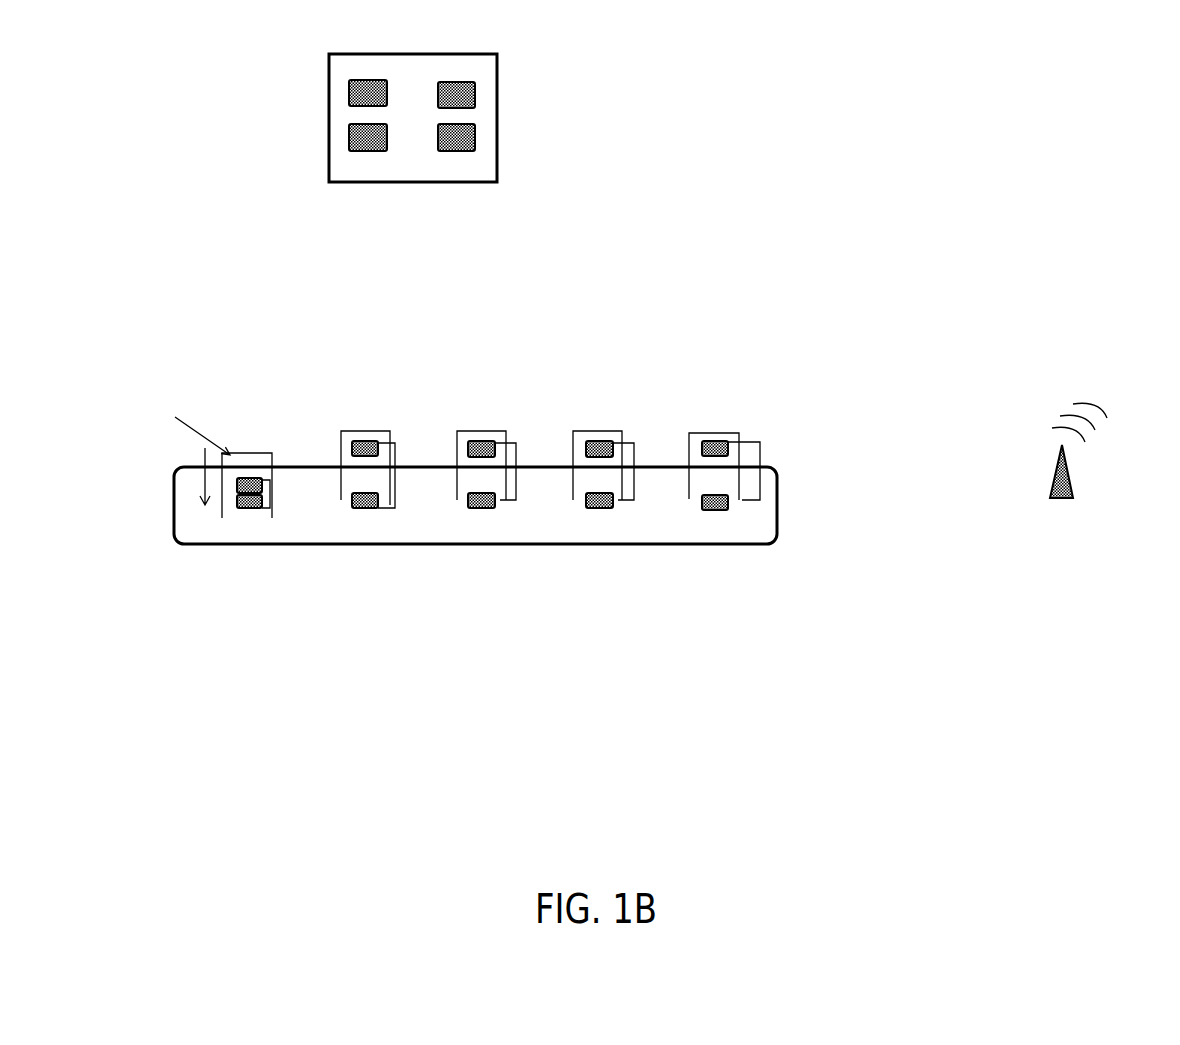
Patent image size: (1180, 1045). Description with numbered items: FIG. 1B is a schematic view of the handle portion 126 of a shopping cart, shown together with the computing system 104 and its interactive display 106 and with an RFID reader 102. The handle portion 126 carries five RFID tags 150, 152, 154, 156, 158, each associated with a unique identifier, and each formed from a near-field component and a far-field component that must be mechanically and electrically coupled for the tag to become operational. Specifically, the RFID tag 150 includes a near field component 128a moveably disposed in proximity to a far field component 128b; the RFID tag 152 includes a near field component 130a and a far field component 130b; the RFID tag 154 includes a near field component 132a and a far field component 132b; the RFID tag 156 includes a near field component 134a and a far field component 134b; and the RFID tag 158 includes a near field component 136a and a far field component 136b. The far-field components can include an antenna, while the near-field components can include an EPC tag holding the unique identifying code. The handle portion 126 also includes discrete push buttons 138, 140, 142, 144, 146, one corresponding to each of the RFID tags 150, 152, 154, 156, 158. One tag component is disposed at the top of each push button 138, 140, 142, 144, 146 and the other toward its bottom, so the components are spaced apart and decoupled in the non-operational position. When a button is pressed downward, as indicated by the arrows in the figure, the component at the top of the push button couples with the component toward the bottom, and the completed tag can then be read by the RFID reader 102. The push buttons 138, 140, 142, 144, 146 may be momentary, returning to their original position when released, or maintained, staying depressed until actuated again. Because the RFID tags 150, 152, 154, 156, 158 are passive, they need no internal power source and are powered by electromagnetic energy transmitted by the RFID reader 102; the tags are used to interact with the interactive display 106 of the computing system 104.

The RFID reader 102 is at (1073, 470).
The computing system 104 is at (497, 81).
The interactive display 106 is at (475, 136).
The handle portion 126 is at (173, 505).
The near field component 128a is at (248, 480).
The far field component 128b is at (243, 507).
The near field component 130a is at (370, 446).
The far field component 130b is at (367, 510).
The near field component 132a is at (483, 446).
The far field component 132b is at (477, 510).
The near field component 134a is at (593, 446).
The far field component 134b is at (600, 510).
The near field component 136a is at (712, 446).
The far field component 136b is at (722, 510).
The push button 138 is at (222, 512).
The push button 140 is at (350, 470).
The push button 142 is at (499, 487).
The push button 144 is at (571, 487).
The push button 146 is at (739, 477).
The RFID tag 150 is at (268, 490).
The RFID tag 152 is at (390, 435).
The RFID tag 154 is at (517, 465).
The RFID tag 156 is at (634, 467).
The RFID tag 158 is at (778, 471).